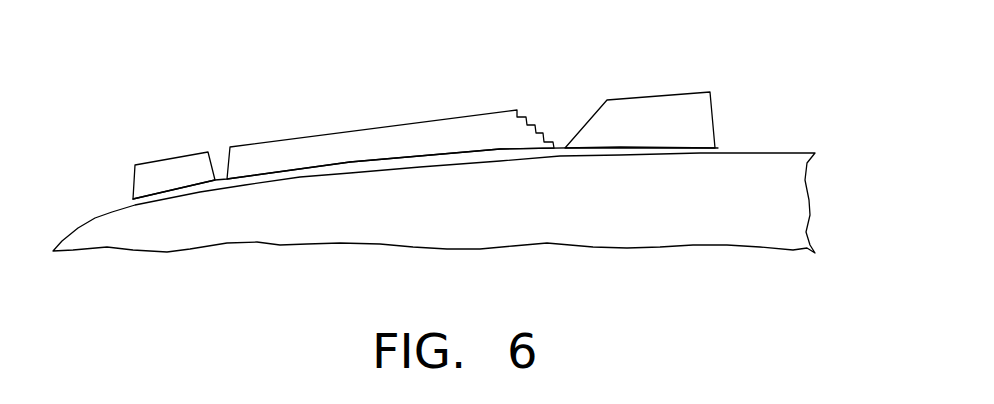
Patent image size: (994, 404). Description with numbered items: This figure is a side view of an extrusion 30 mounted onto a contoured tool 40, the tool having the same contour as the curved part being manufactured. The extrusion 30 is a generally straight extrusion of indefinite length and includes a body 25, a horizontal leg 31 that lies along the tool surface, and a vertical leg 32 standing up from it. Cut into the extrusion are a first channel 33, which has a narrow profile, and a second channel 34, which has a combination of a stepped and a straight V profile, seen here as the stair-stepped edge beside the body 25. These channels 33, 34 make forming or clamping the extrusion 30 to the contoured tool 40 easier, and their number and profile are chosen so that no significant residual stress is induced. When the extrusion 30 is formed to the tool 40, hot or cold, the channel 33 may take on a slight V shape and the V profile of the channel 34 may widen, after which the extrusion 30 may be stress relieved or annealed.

The extrusion 30 is at (444, 126).
The contoured tool 40 is at (750, 216).
The horizontal leg 31 is at (718, 148).
The vertical leg 32 is at (146, 175).
The first channel 33 is at (222, 158).
The body 25 is at (667, 134).
The second channel 34 is at (574, 98).